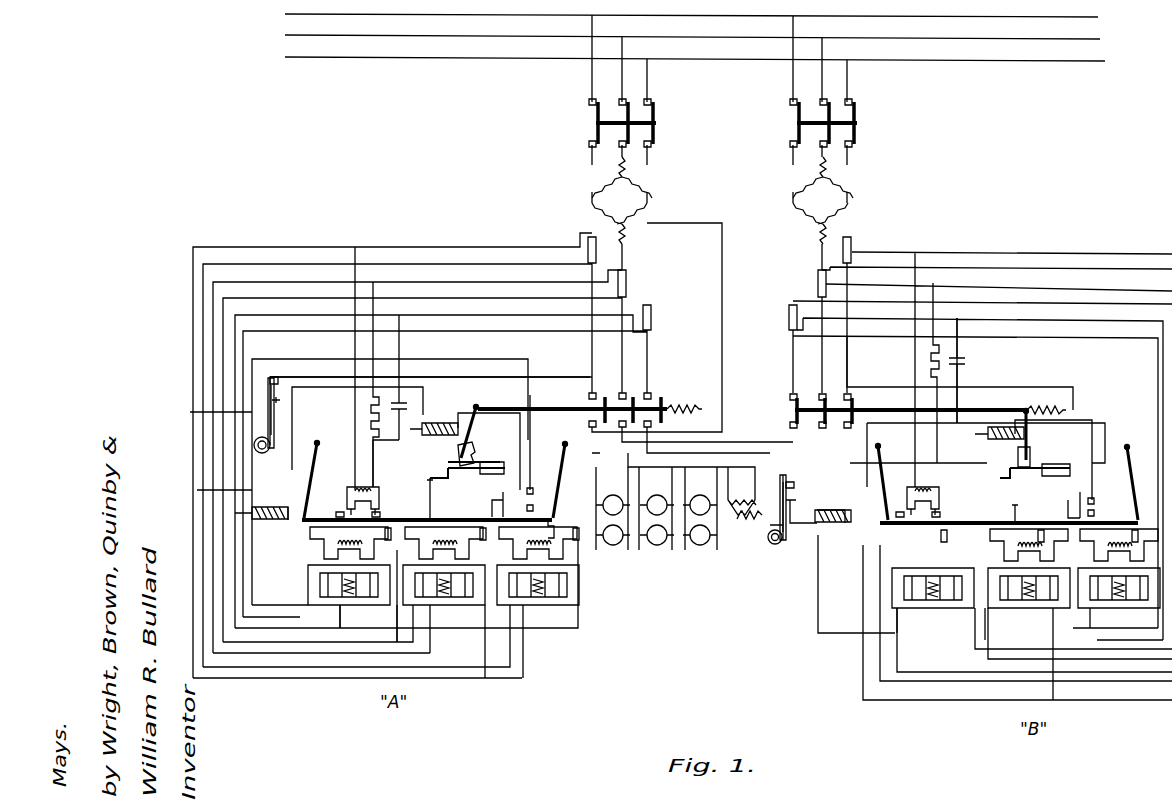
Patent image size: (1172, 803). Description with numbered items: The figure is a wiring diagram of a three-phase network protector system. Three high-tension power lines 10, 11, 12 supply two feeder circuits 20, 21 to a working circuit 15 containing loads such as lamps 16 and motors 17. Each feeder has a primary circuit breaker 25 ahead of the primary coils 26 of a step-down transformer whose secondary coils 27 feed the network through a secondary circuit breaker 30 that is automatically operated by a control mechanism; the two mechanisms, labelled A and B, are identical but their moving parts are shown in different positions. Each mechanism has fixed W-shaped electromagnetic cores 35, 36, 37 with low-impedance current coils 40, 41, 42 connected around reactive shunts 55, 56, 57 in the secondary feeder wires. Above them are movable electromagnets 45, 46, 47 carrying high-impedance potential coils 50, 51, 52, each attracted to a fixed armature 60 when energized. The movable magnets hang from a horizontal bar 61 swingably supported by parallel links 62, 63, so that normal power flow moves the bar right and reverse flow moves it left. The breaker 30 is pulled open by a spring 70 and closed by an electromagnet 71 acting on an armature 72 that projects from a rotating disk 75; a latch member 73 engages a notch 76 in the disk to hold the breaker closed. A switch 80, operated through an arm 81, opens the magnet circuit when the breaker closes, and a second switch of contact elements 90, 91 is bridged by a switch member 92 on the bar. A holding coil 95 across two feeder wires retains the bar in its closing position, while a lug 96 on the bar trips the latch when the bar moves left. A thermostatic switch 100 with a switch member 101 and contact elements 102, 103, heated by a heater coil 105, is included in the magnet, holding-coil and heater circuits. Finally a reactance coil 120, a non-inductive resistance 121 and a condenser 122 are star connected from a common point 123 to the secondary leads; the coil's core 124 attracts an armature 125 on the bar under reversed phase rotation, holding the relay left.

The high-tension power line 10 is at (285, 14).
The high-tension power line 11 is at (285, 35).
The high-tension power line 12 is at (313, 57).
The working circuit 15 is at (737, 433).
The lamps 16 is at (660, 545).
The motors 17 is at (742, 528).
The feeder circuit 20 is at (619, 83).
The feeder circuit 21 is at (828, 90).
The primary circuit breaker 25 is at (588, 114).
The primary coils 26 is at (619, 167).
The secondary coils 27 is at (629, 206).
The secondary circuit breaker 30 is at (580, 400).
The fixed electromagnetic core 35 is at (308, 590).
The fixed electromagnetic core 36 is at (452, 595).
The fixed electromagnetic core 37 is at (565, 596).
The current coil 40 is at (344, 602).
The current coil 41 is at (433, 615).
The current coil 42 is at (535, 595).
The movable electromagnet 45 is at (302, 526).
The movable electromagnet 46 is at (403, 555).
The movable electromagnet 47 is at (497, 555).
The potential coil 50 is at (310, 555).
The potential coil 51 is at (406, 518).
The potential coil 52 is at (563, 526).
The reactive shunt 55 is at (650, 326).
The reactive shunt 56 is at (624, 290).
The reactive shunt 57 is at (594, 262).
The fixed armature 60 is at (762, 541).
The horizontal bar 61 is at (338, 513).
The parallel link 62 is at (311, 453).
The parallel link 63 is at (572, 460).
The spring 70 is at (685, 400).
The electromagnet 71 is at (439, 423).
The armature 72 is at (475, 410).
The latch member 73 is at (445, 457).
The rotating disk 75 is at (470, 452).
The notch 76 is at (455, 472).
The switch 80 is at (528, 452).
The arm 81 is at (489, 458).
The contact element 90 is at (527, 485).
The contact element 91 is at (533, 508).
The switch member 92 is at (502, 500).
The holding coil 95 is at (260, 508).
The lug 96 is at (435, 510).
The thermostatic switch 100 is at (790, 558).
The switch member 101 is at (270, 378).
The contact element 102 is at (278, 378).
The contact element 103 is at (290, 400).
The heater coil 105 is at (259, 450).
The reactance coil 120 is at (346, 473).
The non-inductive resistance 121 is at (376, 380).
The condenser 122 is at (408, 400).
The common point 123 is at (379, 450).
The core 124 is at (353, 486).
The armature 125 is at (384, 512).